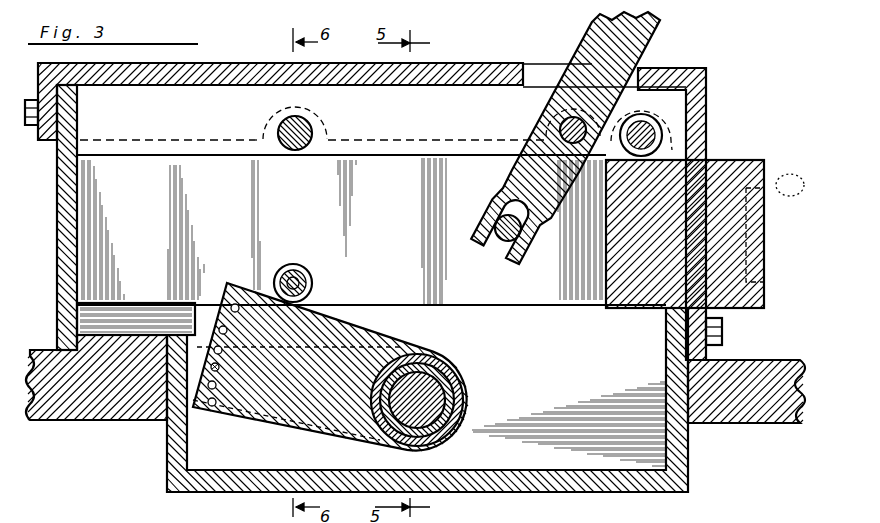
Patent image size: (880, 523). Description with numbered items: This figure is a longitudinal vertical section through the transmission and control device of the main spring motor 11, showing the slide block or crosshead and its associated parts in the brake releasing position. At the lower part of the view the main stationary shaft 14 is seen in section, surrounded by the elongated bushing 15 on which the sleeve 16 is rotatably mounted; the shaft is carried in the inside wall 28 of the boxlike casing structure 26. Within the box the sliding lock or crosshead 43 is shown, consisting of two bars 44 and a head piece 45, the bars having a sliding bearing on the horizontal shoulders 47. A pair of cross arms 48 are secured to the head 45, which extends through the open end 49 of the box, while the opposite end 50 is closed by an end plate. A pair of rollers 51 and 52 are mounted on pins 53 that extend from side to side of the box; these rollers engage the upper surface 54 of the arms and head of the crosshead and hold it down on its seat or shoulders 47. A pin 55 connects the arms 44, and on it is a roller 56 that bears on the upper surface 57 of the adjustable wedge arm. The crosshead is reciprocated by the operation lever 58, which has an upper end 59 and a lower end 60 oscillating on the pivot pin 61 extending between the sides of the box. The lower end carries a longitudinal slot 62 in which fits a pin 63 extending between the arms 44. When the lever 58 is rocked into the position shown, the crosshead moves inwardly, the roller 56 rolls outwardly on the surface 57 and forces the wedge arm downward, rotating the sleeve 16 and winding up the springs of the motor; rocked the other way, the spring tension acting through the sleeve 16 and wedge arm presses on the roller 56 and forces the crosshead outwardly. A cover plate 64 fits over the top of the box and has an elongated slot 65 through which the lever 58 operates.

The main spring motor 11 is at (162, 447).
The main stationary shaft 14 is at (430, 394).
The elongated bushing 15 is at (447, 402).
The sleeve 16 is at (455, 417).
The boxlike casing structure 26 is at (712, 85).
The inside wall 28 is at (590, 346).
The sliding lock or crosshead 43 is at (746, 162).
The bars 44 is at (410, 215).
The head piece 45 is at (734, 248).
The horizontal shoulders 47 is at (142, 301).
The cross arms 48 is at (762, 200).
The open end 49 is at (722, 330).
The opposite end 50 is at (60, 238).
The roller 51 is at (308, 125).
The roller 52 is at (662, 130).
The pins 53 is at (265, 130).
The upper surface 54 is at (208, 157).
The pin 55 is at (288, 266).
The roller 56 is at (312, 287).
The upper surface 57 is at (344, 305).
The operation lever 58 is at (608, 37).
The upper end 59 is at (656, 31).
The lower end 60 is at (530, 178).
The pivot pin 61 is at (558, 126).
The longitudinal slot 62 is at (510, 206).
The pin 63 is at (500, 242).
The cover plate 64 is at (458, 78).
The elongated slot 65 is at (536, 78).